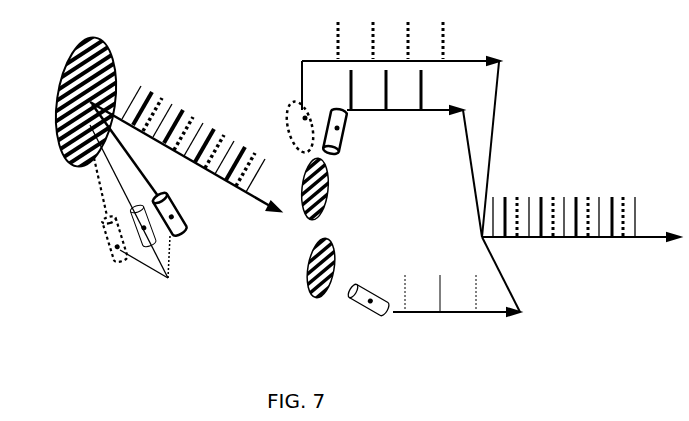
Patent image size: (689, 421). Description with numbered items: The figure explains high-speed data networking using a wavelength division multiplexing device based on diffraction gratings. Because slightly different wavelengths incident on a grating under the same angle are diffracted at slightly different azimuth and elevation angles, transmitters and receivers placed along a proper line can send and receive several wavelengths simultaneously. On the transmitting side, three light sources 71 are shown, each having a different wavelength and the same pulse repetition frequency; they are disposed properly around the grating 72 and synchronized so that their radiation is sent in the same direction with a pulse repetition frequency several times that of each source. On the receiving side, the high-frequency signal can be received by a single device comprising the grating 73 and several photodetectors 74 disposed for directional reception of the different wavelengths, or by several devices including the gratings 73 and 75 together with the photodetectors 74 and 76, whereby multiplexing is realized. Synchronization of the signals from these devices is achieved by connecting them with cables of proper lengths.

The light sources 71 is at (139, 207).
The grating 72 is at (88, 55).
The grating 73 is at (317, 198).
The photodetectors 74 is at (337, 128).
The grating 75 is at (318, 283).
The photodetector 76 is at (368, 305).